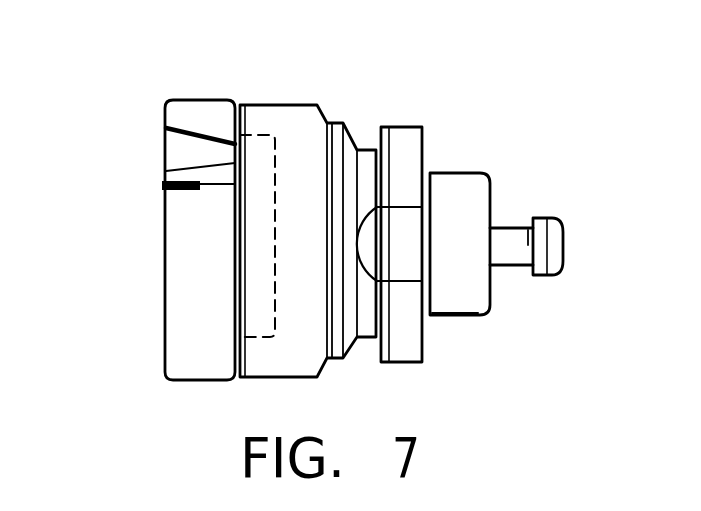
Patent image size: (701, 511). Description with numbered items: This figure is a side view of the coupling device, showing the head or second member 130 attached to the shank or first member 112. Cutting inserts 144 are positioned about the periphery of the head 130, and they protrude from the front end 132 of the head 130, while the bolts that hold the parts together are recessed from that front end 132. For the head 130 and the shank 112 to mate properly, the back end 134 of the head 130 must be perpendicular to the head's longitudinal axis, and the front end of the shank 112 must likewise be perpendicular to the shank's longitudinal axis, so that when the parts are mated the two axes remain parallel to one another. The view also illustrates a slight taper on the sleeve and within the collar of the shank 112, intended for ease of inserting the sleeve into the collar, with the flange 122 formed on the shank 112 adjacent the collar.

The shank or first member 112 is at (277, 88).
The flange 122 is at (408, 126).
The head or second member 130 is at (149, 209).
The front end of the head 132 is at (164, 282).
The back end of the head 134 is at (236, 122).
The cutting inserts 144 is at (191, 182).